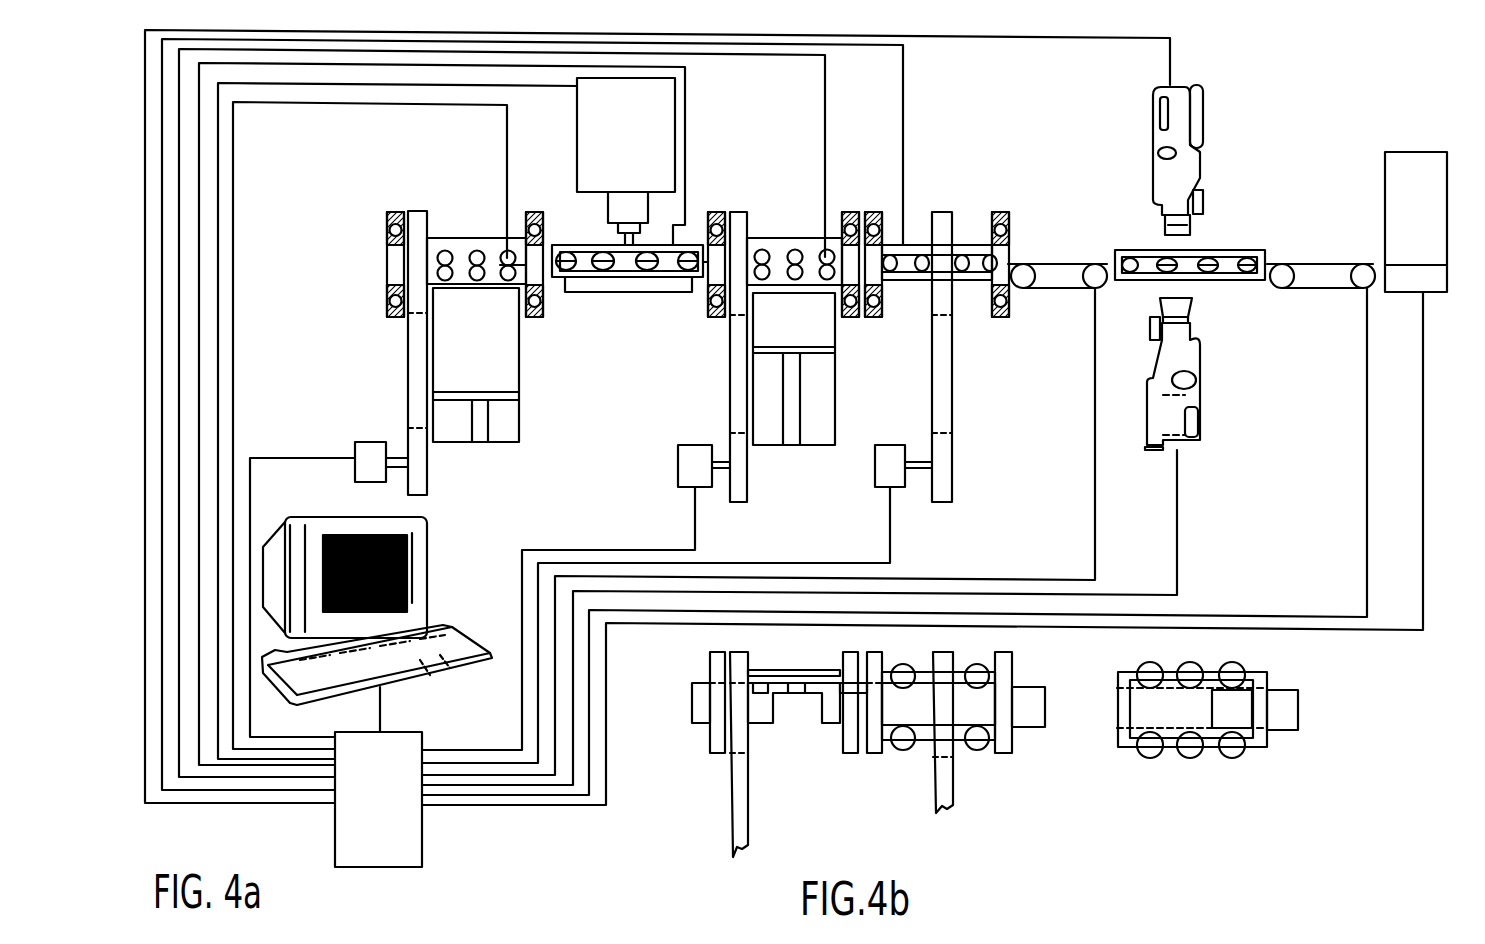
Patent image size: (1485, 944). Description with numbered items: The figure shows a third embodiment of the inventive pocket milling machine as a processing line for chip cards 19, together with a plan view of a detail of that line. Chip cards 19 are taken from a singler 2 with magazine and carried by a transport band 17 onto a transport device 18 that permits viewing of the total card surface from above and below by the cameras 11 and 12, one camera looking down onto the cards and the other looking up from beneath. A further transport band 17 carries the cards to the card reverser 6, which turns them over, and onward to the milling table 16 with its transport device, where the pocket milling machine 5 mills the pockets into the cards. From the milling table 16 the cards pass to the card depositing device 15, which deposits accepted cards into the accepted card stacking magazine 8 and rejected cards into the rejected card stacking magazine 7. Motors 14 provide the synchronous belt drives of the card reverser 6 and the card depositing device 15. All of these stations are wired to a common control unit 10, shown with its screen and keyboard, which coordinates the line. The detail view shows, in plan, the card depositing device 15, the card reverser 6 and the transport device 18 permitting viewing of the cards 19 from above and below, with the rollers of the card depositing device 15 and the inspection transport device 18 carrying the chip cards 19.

In FIG. 4A, the singler with magazine 2 is at (1418, 210).
In FIG. 4A, the pocket milling machine 5 is at (618, 184).
In FIG. 4A, the card reverser 6 is at (972, 262).
In FIG. 4B, the card reverser 6 is at (910, 735).
In FIG. 4A, the rejected card stacking magazine 7 is at (783, 315).
In FIG. 4A, the accepted card stacking magazine 8 is at (467, 345).
In FIG. 4A, the control unit 10 is at (400, 812).
In FIG. 4A, the camera 11 is at (1167, 182).
In FIG. 4A, the camera 12 is at (1190, 347).
In FIG. 4A, the motor 14 is at (368, 452).
In FIG. 4A, the card depositing device 15 is at (460, 243).
In FIG. 4B, the card depositing device 15 is at (785, 675).
In FIG. 4A, the milling table 16 is at (670, 287).
In FIG. 4A, the transport band 17 is at (1057, 275).
In FIG. 4A, the transport device 18 is at (1185, 267).
In FIG. 4B, the transport device 18 is at (1255, 738).
In FIG. 4A, the chip cards 19 is at (518, 250).
In FIG. 4B, the chip cards 19 is at (760, 705).